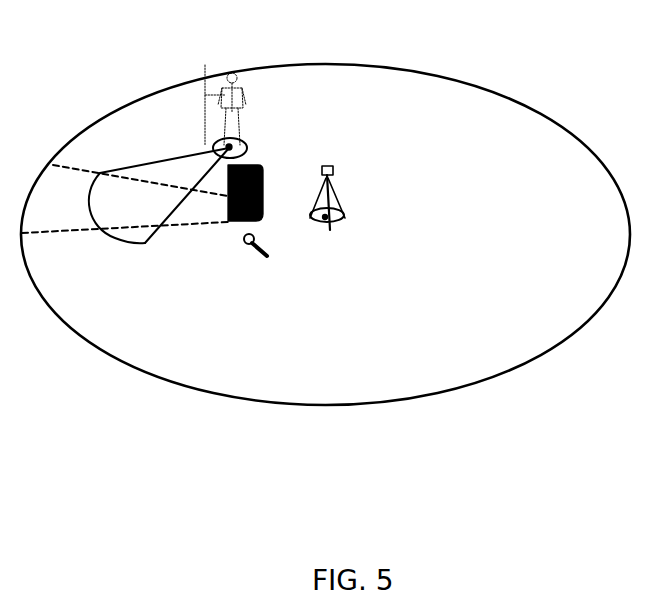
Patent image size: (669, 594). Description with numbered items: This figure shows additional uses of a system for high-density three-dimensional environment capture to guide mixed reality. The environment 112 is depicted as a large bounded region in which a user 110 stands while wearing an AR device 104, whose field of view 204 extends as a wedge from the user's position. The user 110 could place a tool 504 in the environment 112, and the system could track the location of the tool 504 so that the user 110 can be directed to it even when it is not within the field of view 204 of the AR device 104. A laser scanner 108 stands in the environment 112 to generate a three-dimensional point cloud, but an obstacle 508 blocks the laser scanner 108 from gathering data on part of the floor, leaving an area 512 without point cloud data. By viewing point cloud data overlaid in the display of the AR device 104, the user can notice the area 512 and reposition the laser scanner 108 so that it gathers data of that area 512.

The AR device 104 is at (236, 78).
The laser scanner 108 is at (330, 165).
The user 110 is at (238, 135).
The environment 112 is at (570, 132).
The field of view 204 is at (138, 237).
The tool 504 is at (260, 253).
The obstacle 508 is at (262, 165).
The area 512 is at (67, 172).